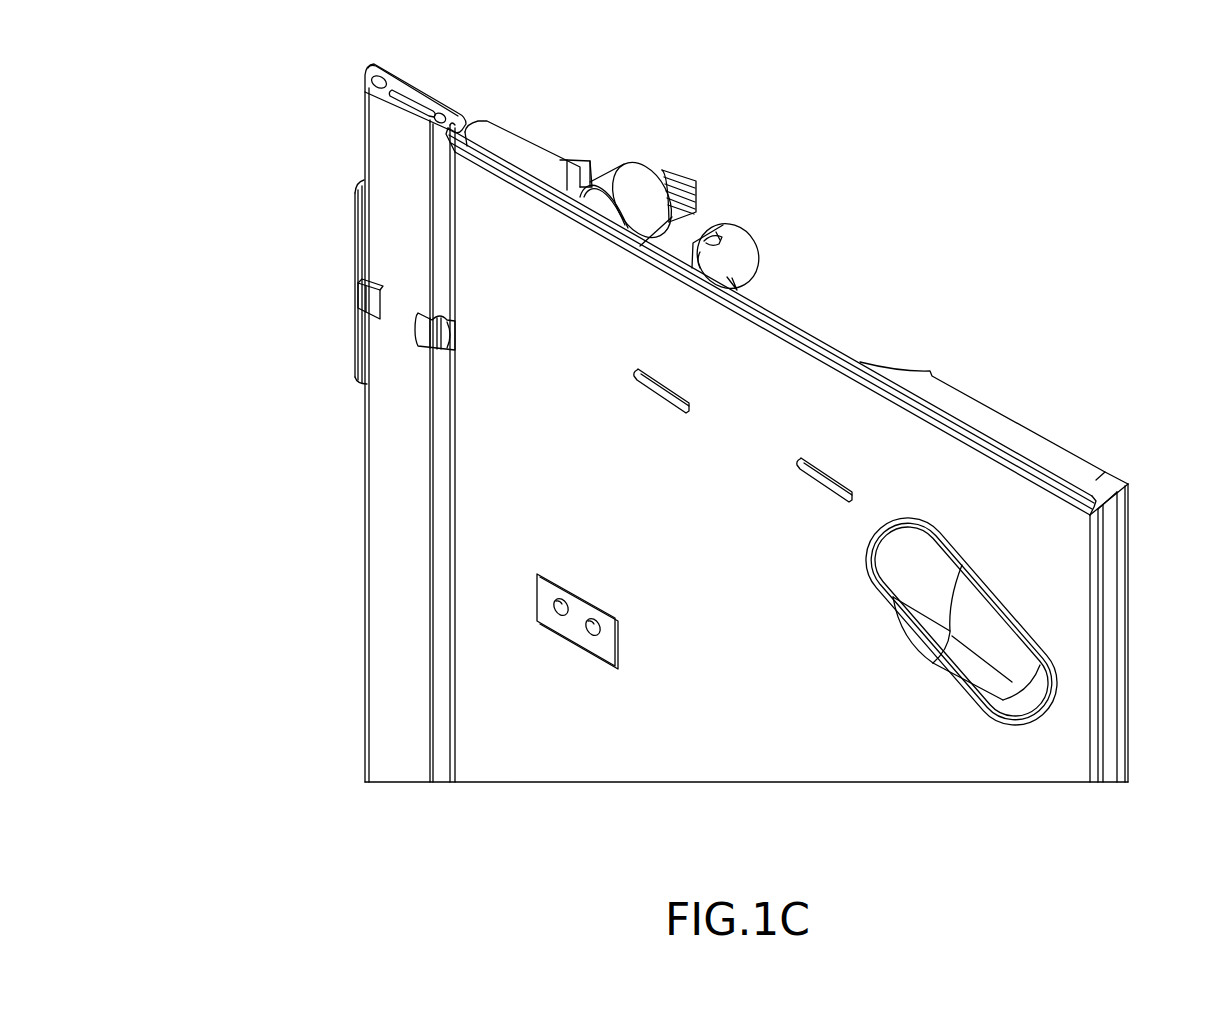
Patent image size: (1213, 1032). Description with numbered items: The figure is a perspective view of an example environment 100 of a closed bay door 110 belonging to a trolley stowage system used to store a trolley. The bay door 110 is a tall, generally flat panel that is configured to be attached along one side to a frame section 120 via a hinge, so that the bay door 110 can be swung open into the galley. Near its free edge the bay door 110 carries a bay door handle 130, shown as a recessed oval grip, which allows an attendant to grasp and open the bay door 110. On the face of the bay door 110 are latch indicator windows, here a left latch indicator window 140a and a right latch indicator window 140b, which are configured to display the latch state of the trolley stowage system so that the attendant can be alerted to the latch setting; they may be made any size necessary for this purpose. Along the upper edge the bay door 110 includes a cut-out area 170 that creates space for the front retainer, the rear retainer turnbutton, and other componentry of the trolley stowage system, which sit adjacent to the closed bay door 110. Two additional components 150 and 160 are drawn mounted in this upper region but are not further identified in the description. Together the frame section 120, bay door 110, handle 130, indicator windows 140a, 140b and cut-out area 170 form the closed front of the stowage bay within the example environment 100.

The example environment 100 is at (243, 45).
The bay door 110 is at (497, 722).
The frame section 120 is at (378, 371).
The bay door handle 130 is at (988, 668).
The left latch indicator window 140a is at (660, 378).
The right latch indicator window 140b is at (830, 470).
The fitting 150 is at (683, 172).
The connector 160 is at (747, 232).
The cut-out area 170 is at (987, 440).